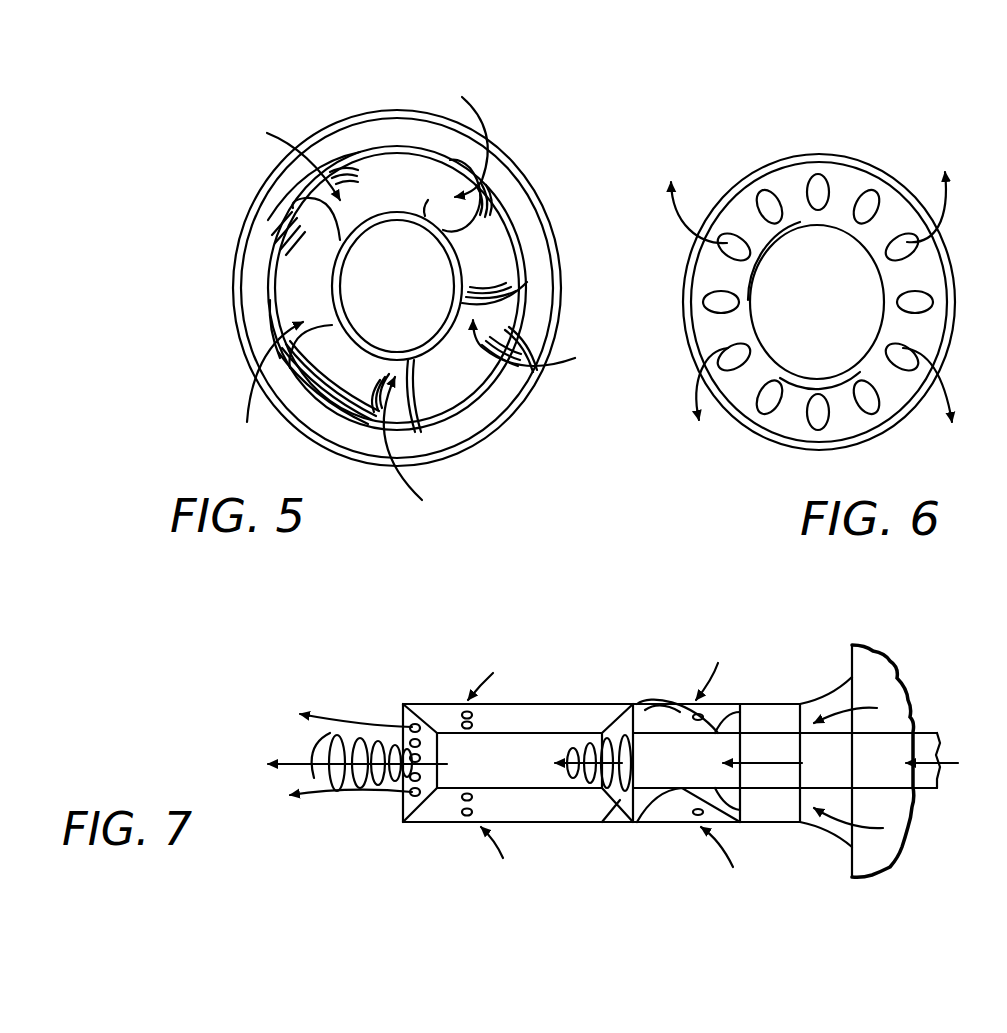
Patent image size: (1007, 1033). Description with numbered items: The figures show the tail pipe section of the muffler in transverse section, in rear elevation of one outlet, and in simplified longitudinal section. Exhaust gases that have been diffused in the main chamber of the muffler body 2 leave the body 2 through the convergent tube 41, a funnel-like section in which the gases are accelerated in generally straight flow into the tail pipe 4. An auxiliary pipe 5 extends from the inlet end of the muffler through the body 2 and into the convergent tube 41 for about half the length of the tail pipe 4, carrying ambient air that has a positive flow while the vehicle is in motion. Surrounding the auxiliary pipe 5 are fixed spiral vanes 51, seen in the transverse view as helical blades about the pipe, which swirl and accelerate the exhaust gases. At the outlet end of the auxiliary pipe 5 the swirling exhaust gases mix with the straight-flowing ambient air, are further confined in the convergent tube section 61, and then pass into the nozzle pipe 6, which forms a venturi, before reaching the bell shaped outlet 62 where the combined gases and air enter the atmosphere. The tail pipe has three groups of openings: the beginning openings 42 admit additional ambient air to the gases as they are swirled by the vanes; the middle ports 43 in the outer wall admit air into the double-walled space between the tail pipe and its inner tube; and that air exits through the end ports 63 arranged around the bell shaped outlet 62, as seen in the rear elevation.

In FIG. 7, the muffler body 2 is at (857, 858).
In FIG. 5, the tail pipe 4 is at (390, 105).
In FIG. 6, the tail pipe 4 is at (748, 173).
In FIG. 7, the tail pipe 4 is at (587, 702).
In FIG. 5, the convergent tube 41 is at (322, 153).
In FIG. 7, the convergent tube 41 is at (828, 708).
In FIG. 7, the beginning group of openings 42 is at (690, 815).
In FIG. 7, the middle group of ports 43 is at (463, 800).
In FIG. 5, the auxiliary pipe 5 is at (333, 260).
In FIG. 7, the auxiliary pipe 5 is at (767, 737).
In FIG. 5, the spiral vanes 51 is at (292, 222).
In FIG. 7, the spiral vanes 51 is at (652, 713).
In FIG. 7, the nozzle pipe 6 is at (510, 733).
In FIG. 7, the convergent tube section 61 is at (610, 818).
In FIG. 6, the bell shaped outlet 62 is at (795, 170).
In FIG. 7, the bell shaped outlet 62 is at (418, 722).
In FIG. 6, the end group of ports 63 is at (727, 233).
In FIG. 7, the end group of ports 63 is at (418, 795).